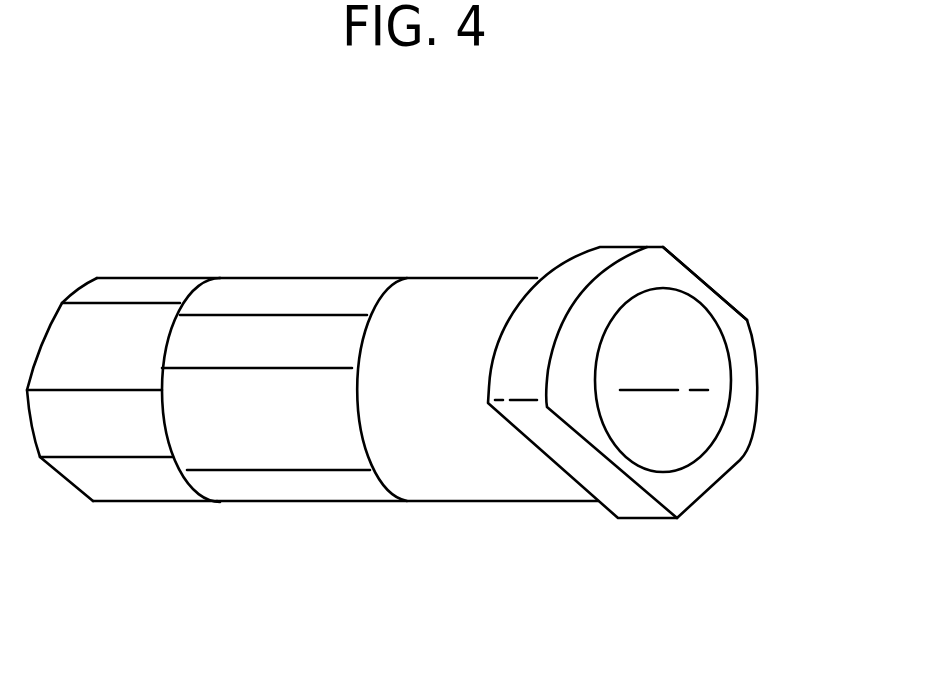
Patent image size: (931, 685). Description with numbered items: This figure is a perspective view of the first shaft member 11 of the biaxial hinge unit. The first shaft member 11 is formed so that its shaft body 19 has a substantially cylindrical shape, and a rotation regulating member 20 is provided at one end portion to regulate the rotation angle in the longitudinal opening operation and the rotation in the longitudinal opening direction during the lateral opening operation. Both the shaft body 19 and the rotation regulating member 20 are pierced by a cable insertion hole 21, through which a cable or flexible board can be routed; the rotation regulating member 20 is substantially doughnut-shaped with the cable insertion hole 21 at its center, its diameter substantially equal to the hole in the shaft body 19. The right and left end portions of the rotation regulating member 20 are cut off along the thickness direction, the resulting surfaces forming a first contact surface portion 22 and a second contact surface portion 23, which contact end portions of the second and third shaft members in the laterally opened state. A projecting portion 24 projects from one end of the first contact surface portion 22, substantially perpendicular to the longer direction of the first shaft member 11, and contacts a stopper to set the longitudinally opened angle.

The first shaft member 11 is at (566, 181).
The shaft body 19 is at (227, 293).
The rotation regulating member 20 is at (750, 397).
The cable insertion hole 21 is at (647, 466).
The first contact surface portion 22 is at (573, 456).
The second contact surface portion 23 is at (706, 287).
The projecting portion 24 is at (490, 393).